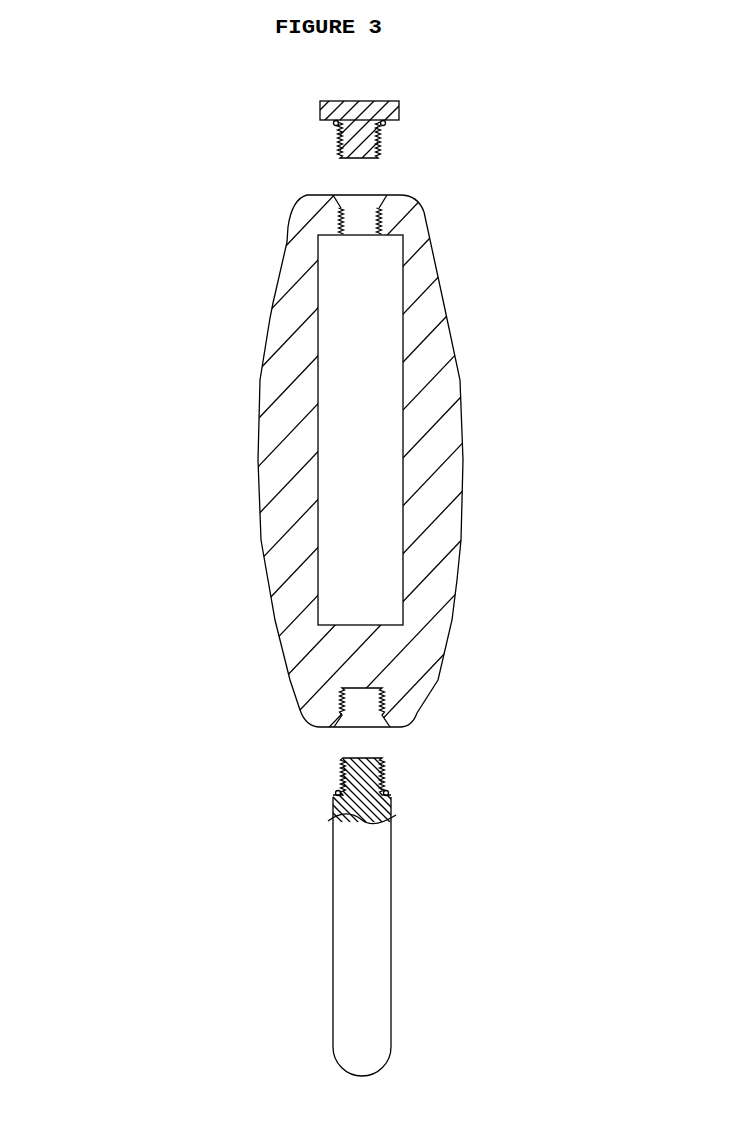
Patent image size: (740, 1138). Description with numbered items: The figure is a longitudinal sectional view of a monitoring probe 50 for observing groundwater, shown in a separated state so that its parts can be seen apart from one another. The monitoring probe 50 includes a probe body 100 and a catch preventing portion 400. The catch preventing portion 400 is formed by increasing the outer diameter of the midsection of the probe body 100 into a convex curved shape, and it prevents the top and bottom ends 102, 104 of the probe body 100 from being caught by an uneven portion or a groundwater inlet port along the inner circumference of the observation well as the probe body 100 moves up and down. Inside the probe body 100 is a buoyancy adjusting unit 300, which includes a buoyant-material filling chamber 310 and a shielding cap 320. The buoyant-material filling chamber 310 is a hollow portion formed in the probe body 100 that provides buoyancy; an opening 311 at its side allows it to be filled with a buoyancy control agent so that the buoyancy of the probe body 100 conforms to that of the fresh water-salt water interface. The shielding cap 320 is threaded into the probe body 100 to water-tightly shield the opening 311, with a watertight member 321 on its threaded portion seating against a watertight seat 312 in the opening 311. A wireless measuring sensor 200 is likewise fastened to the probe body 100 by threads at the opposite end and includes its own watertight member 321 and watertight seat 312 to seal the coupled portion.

The monitoring probe 50 is at (148, 240).
The probe body 100 is at (271, 324).
The top end of probe body 102 is at (303, 172).
The bottom end of probe body 104 is at (288, 737).
The wireless measuring sensor 200 is at (340, 922).
The buoyancy adjusting unit 300 is at (547, 150).
The buoyant-material filling chamber 310 is at (376, 372).
The opening 311 is at (356, 227).
The watertight seat 312 is at (383, 720).
The shielding cap 320 is at (382, 135).
The watertight member 321 is at (389, 792).
The catch preventing portion 400 is at (257, 461).